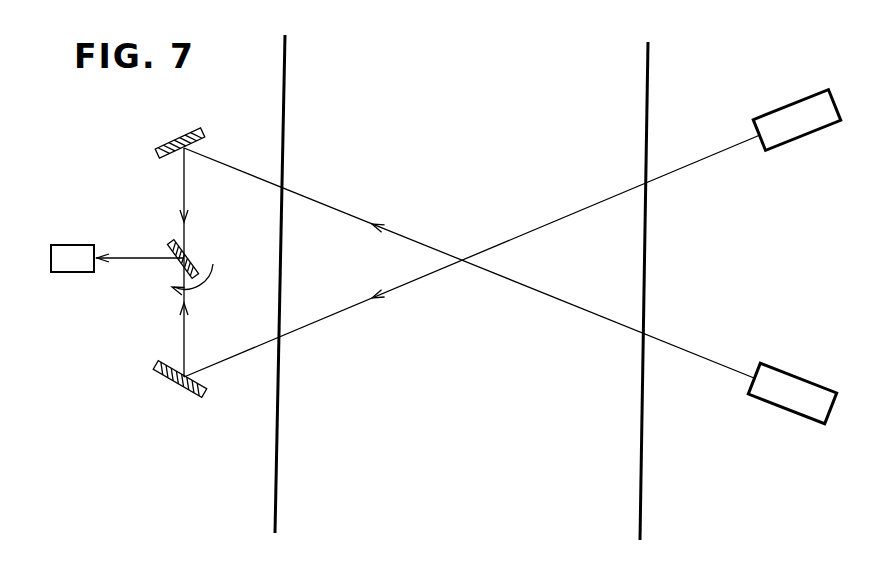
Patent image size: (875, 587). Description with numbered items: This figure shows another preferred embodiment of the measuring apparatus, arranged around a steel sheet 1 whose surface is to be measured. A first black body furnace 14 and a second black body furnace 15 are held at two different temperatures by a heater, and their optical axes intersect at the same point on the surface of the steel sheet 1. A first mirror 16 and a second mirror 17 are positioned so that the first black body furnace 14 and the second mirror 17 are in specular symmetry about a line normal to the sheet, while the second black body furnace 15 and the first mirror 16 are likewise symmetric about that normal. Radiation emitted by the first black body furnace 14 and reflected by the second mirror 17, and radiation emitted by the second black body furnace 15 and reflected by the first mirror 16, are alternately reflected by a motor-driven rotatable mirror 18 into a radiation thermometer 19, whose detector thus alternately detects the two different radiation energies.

The steel sheet 1 is at (607, 483).
The first black body furnace 14 is at (838, 108).
The second black body furnace 15 is at (810, 388).
The first mirror 16 is at (187, 131).
The second mirror 17 is at (193, 394).
The rotatable mirror 18 is at (190, 263).
The radiation thermometer 19 is at (80, 272).